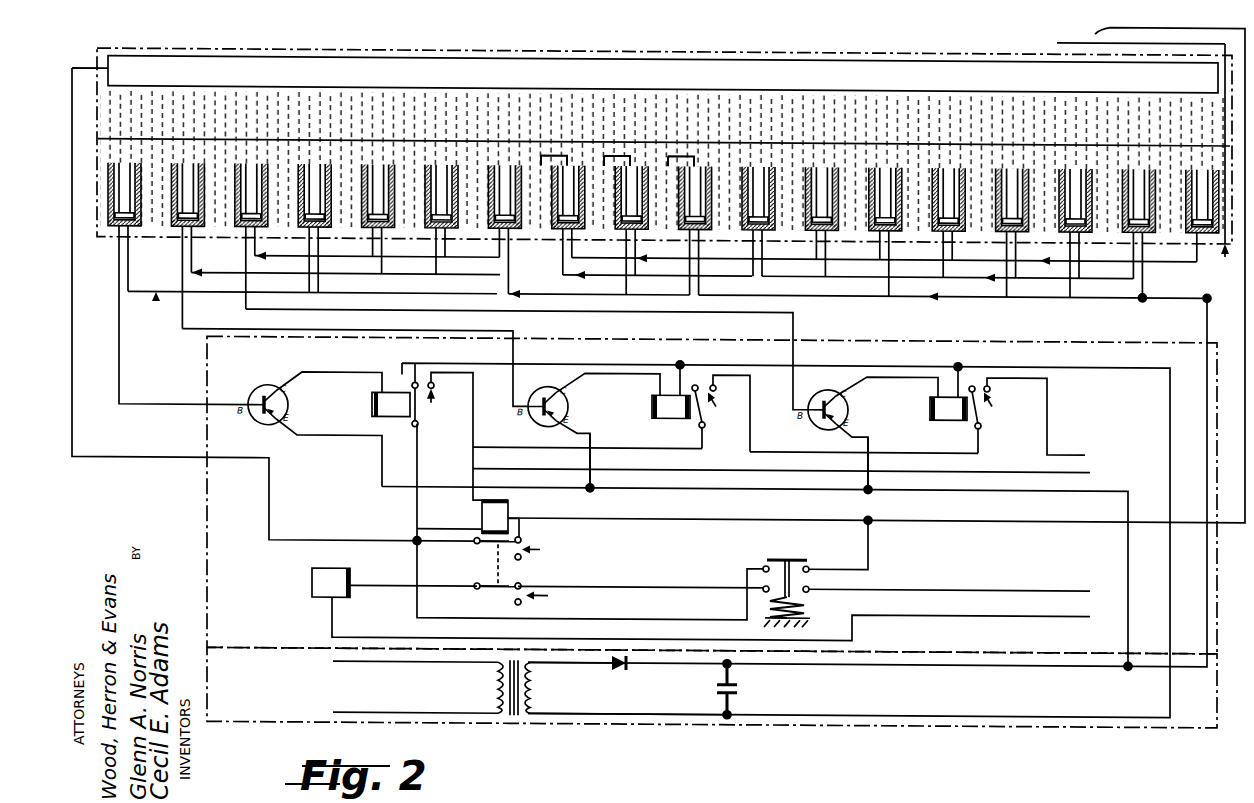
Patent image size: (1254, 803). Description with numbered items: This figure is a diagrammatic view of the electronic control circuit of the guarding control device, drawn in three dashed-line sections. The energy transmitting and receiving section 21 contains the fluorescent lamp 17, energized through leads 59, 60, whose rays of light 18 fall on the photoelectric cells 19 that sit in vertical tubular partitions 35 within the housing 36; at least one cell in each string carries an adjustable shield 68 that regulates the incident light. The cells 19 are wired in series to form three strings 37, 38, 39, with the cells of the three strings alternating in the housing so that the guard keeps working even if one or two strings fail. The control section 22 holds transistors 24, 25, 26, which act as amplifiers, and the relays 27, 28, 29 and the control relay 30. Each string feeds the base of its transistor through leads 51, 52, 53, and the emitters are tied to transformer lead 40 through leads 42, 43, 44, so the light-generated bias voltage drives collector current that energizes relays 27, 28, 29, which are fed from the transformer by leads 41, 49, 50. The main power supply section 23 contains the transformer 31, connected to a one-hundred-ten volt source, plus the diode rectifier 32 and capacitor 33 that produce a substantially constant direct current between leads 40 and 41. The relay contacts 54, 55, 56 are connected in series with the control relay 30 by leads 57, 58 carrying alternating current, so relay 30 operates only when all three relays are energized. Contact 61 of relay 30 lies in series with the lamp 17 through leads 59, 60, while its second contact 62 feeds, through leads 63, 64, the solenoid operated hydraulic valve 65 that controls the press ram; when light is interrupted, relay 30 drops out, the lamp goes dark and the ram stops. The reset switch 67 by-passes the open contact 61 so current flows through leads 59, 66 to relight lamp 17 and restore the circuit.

The fluorescent lamp 17 is at (226, 70).
The rays of light 18 is at (298, 160).
The photoelectric cells 19 is at (320, 216).
The energy transmitting and receiving section 21 is at (1227, 168).
The control section 22 is at (1133, 336).
The main power supply section 23 is at (1170, 718).
The transistor 24 is at (262, 384).
The transistor 25 is at (536, 420).
The transistor 26 is at (816, 421).
The relay 27 is at (380, 406).
The relay 28 is at (672, 414).
The relay 29 is at (948, 414).
The control relay 30 is at (488, 504).
The transformer 31 is at (498, 686).
The diode rectifier 32 is at (616, 666).
The capacitor 33 is at (740, 684).
The vertical tubular partitions 35 is at (390, 162).
The housing 36 is at (426, 134).
The series string of cells 37 is at (156, 300).
The series string of cells 38 is at (202, 271).
The series string of cells 39 is at (266, 254).
The transformer lead 40 is at (1207, 432).
The transformer lead 41 is at (452, 360).
The lead 42 is at (382, 470).
The lead 43 is at (590, 442).
The lead 44 is at (868, 434).
The lead 49 is at (676, 368).
The lead 50 is at (954, 370).
The lead 51 is at (170, 403).
The lead 52 is at (513, 350).
The lead 53 is at (793, 347).
The relay contact 54 is at (442, 409).
The relay contact 55 is at (721, 413).
The relay contact 56 is at (1027, 416).
The lead 57 is at (473, 448).
The lead 58 is at (518, 466).
The lead 59 is at (72, 440).
The lead 60 is at (1057, 36).
The relay contact 61 is at (519, 549).
The relay contact 62 is at (525, 576).
The lead 63 is at (384, 583).
The lead 64 is at (383, 635).
The solenoid operated hydraulic valve 65 is at (312, 582).
The lead 66 is at (417, 560).
The reset switch 67 is at (806, 555).
The adjustable shield 68 is at (556, 152).